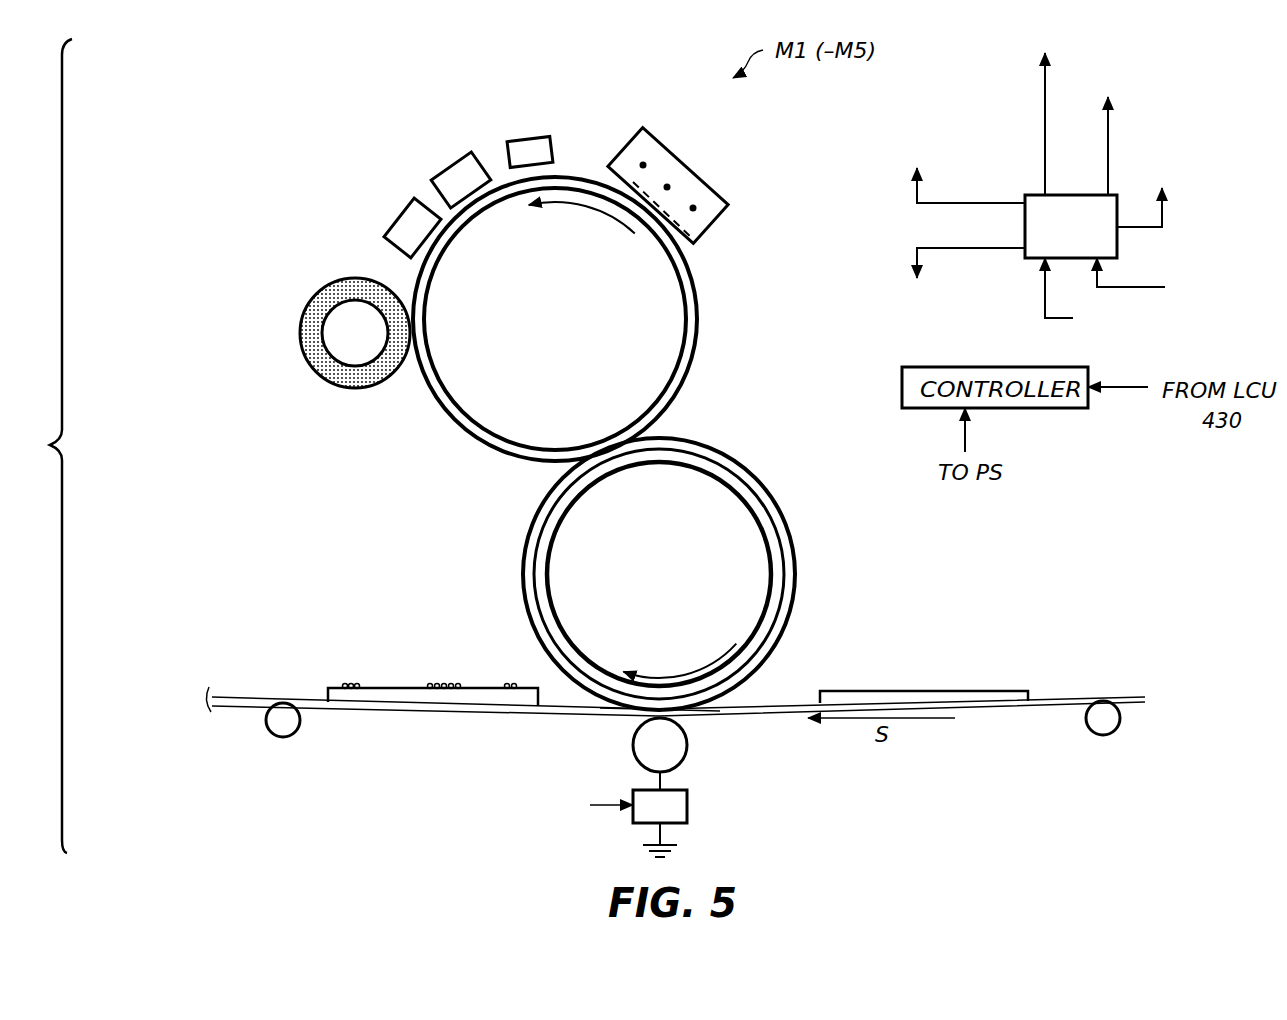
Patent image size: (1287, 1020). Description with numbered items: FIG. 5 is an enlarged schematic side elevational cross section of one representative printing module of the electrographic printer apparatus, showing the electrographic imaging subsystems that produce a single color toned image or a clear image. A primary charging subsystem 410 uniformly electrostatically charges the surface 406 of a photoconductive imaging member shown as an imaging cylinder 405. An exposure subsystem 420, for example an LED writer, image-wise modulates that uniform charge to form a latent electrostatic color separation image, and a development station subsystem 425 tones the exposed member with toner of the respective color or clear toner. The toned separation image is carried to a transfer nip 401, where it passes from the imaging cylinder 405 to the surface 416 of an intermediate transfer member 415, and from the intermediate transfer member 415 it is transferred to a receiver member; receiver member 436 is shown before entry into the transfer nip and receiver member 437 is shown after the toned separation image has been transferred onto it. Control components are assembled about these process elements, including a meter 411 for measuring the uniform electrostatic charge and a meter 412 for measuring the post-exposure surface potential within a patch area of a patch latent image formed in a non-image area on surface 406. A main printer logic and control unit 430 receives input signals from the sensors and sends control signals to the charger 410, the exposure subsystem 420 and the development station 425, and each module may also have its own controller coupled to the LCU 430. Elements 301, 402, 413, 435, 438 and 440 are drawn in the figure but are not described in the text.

The transport web 301 is at (233, 698).
The transfer nip 401 is at (562, 467).
The transfer nip 402 is at (713, 710).
The imaging cylinder 405 is at (692, 278).
The surface of the photoconductive imaging member 406 is at (687, 380).
The primary charging subsystem 410 is at (687, 155).
The meter for measuring the uniform electrostatic charge 411 is at (523, 137).
The meter for measuring the post-exposure surface potential 412 is at (397, 223).
The exposure region 413 is at (622, 175).
The intermediate transfer member 415 is at (757, 473).
The surface of the intermediate transfer member 416 is at (798, 588).
The exposure subsystem 420 is at (447, 167).
The development station subsystem 425 is at (300, 333).
The logic and control unit (LCU) 430 is at (1117, 243).
The transfer backup roller 435 is at (633, 750).
The receiver member 436 is at (926, 690).
The receiver member 437 is at (388, 688).
The toner image 438 is at (447, 688).
The power supply 440 is at (707, 797).